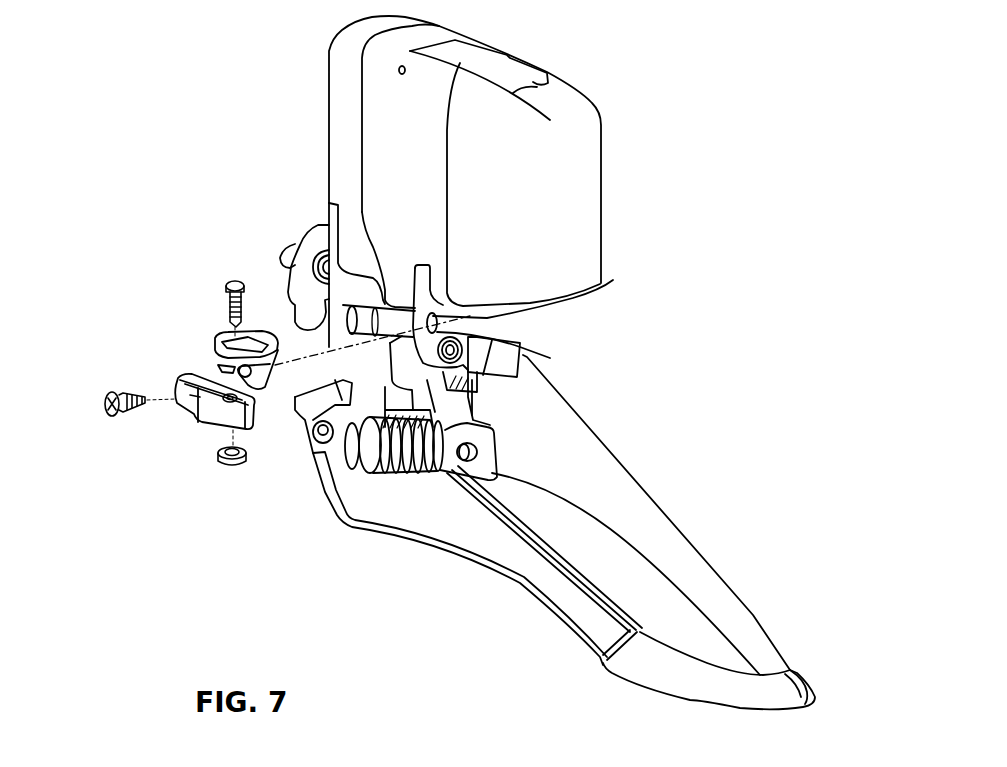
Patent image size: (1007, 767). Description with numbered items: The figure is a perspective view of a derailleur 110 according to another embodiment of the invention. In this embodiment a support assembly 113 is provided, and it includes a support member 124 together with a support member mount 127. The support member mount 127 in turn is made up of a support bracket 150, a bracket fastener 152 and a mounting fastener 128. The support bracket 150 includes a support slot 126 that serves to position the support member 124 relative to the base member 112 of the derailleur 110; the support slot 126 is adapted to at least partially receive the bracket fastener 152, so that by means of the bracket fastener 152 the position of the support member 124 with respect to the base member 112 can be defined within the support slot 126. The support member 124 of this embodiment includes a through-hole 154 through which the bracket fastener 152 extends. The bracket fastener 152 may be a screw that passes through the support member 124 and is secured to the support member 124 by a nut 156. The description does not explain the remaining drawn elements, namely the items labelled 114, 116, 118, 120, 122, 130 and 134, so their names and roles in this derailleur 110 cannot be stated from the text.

The derailleur 110 is at (597, 76).
The base member 112 is at (601, 288).
The support assembly 113 is at (262, 446).
The clamp ring 114 is at (287, 246).
The clamp body 116 is at (318, 228).
The inner chain guide plate 118 is at (386, 497).
The outer chain guide plate 120 is at (742, 623).
The return spring 122 is at (430, 472).
The support member 124 is at (213, 414).
The support slot 126 is at (268, 338).
The support member mount 127 is at (210, 221).
The mounting fastener 128 is at (100, 409).
The linkage member 130 is at (500, 337).
The block face 134 is at (205, 393).
The support bracket 150 is at (212, 345).
The bracket fastener 152 is at (216, 318).
The through-hole 154 is at (228, 397).
The nut 156 is at (233, 465).